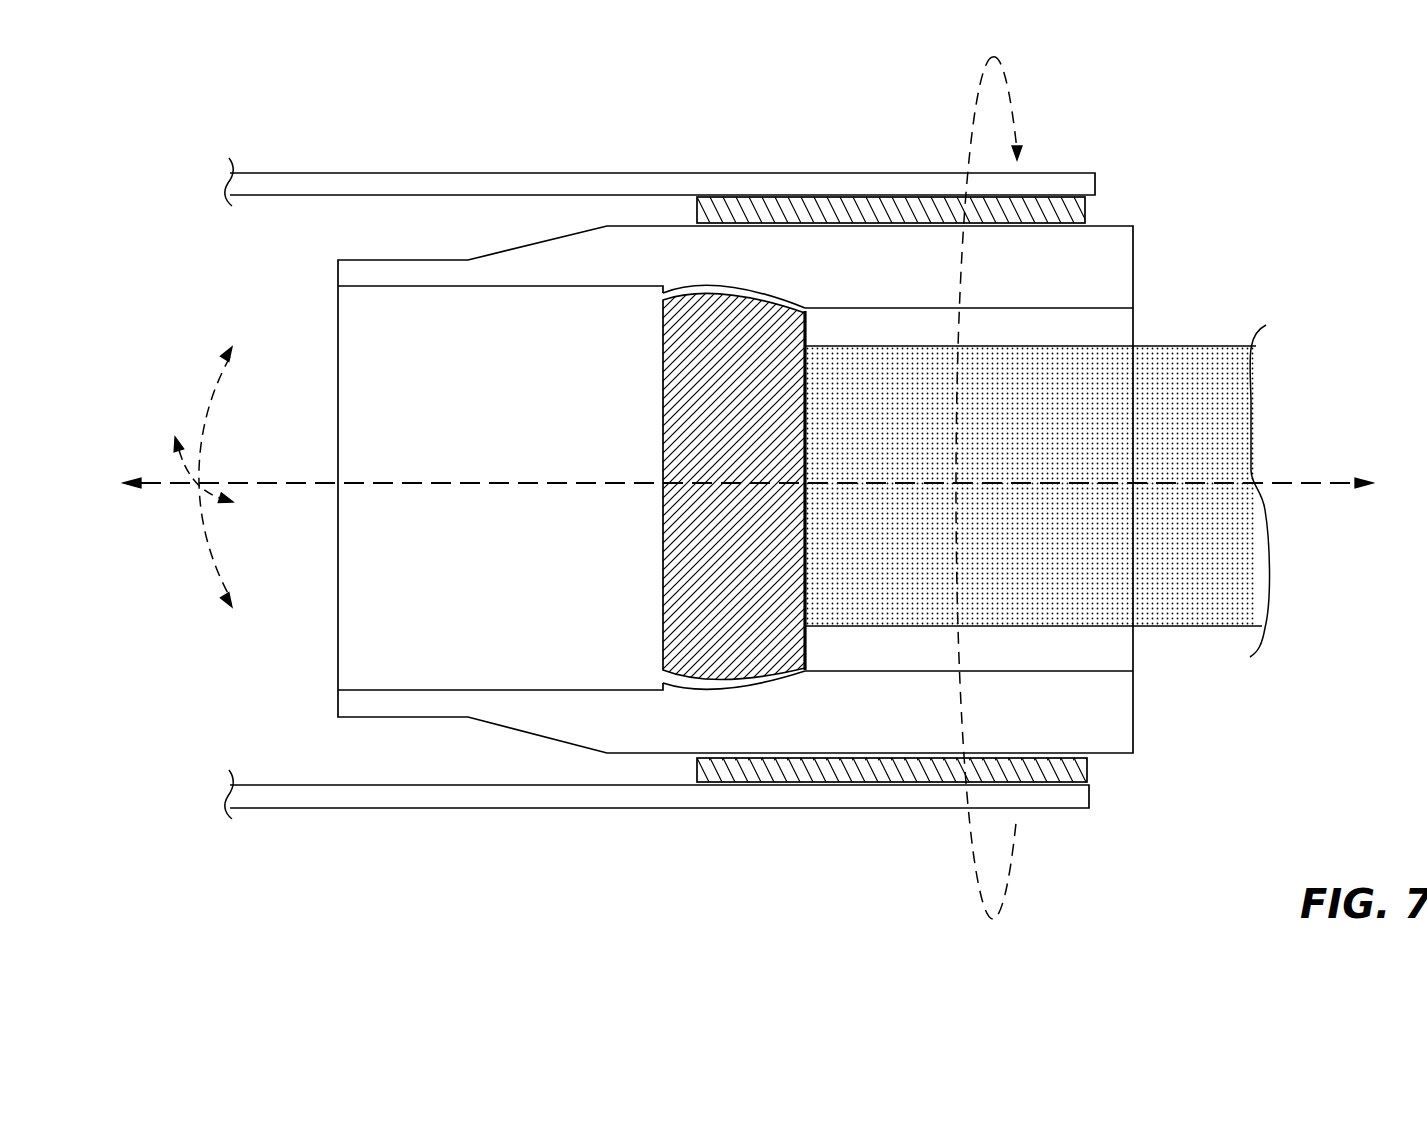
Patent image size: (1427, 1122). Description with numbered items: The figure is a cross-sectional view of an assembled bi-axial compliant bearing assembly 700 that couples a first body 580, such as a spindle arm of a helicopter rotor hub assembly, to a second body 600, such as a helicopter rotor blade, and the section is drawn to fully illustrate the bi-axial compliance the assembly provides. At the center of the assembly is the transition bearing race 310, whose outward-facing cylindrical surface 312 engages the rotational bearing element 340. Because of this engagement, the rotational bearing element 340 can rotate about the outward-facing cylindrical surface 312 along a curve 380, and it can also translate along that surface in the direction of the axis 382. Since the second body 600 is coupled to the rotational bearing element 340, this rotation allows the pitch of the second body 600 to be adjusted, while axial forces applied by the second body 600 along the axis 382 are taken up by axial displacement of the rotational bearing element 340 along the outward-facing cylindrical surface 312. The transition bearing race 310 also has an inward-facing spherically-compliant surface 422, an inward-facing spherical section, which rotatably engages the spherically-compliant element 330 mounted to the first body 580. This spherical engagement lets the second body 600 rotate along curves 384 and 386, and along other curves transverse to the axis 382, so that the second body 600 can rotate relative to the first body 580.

The bi-axial compliant bearing assembly 700 is at (148, 117).
The second body 600 is at (472, 183).
The transition bearing race 310 is at (587, 230).
The outward-facing cylindrical surface 312 is at (1110, 223).
The rotational bearing element 340 is at (885, 208).
The inward-facing spherically-compliant surface 422 is at (680, 296).
The spherically-compliant element 330 is at (690, 662).
The first body 580 is at (1174, 628).
The axis 382 is at (1292, 484).
The curve 380 is at (970, 138).
The curve 384 is at (220, 367).
The curve 386 is at (240, 505).